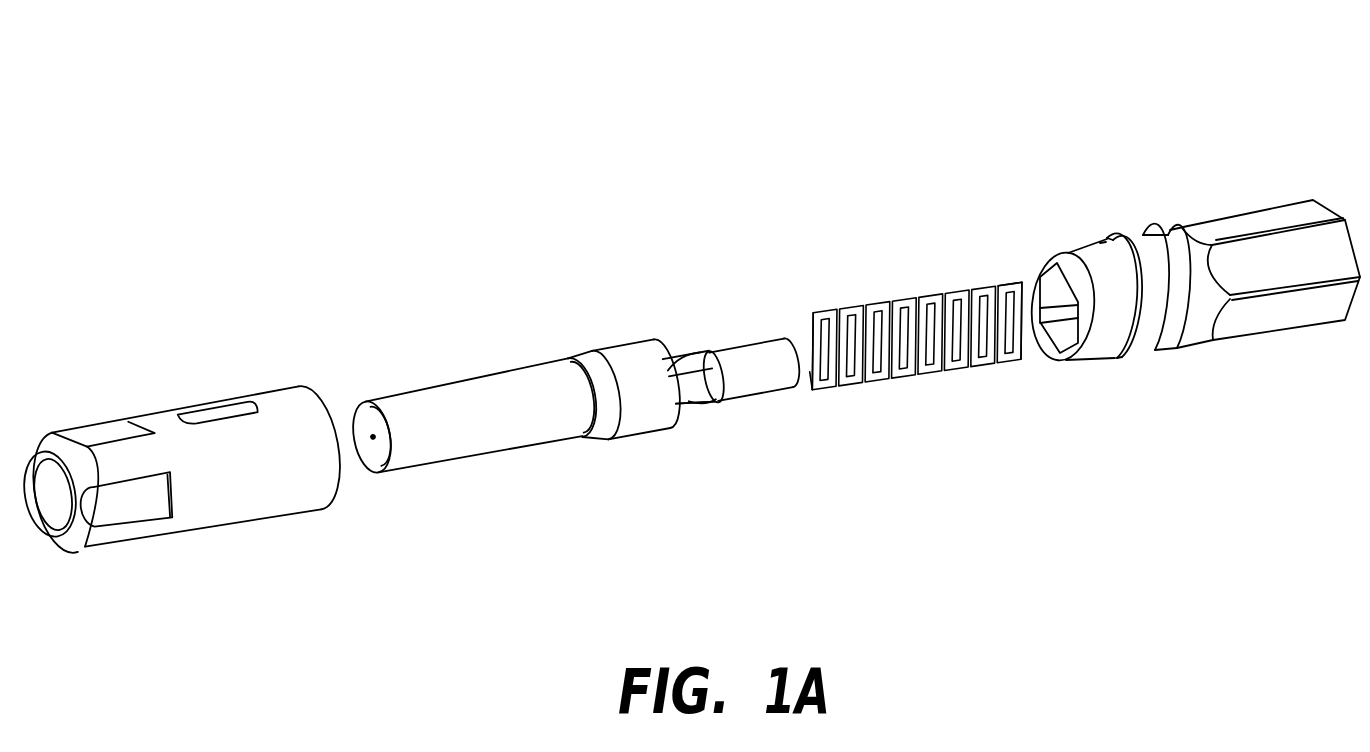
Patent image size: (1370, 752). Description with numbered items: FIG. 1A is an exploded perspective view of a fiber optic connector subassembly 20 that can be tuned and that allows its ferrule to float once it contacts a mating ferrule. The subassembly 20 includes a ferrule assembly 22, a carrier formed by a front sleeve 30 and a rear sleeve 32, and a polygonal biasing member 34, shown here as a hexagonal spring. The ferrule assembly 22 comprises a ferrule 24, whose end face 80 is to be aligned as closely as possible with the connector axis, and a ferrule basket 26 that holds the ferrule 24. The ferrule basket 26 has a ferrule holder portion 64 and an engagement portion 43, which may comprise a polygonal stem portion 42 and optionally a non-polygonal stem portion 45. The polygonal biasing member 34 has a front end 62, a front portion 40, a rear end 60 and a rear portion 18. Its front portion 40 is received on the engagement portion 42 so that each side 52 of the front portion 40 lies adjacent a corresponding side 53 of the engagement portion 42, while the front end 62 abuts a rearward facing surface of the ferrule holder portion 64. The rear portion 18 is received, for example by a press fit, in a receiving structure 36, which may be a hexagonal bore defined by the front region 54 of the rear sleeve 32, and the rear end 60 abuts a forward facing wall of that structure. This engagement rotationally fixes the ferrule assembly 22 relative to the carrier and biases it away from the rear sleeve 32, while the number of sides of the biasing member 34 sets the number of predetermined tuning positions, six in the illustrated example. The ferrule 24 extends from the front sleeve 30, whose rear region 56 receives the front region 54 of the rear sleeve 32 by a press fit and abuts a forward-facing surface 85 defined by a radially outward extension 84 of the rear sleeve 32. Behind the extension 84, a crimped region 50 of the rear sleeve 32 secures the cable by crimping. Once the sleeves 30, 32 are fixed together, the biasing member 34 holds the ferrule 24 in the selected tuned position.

The rear portion 18 is at (988, 277).
The fiber optic connector subassembly 20 is at (788, 135).
The ferrule assembly 22 is at (428, 538).
The ferrule 24 is at (447, 417).
The ferrule basket 26 is at (660, 330).
The front sleeve 30 is at (237, 500).
The rear sleeve 32 is at (1187, 340).
The polygonal biasing member 34 is at (927, 367).
The receiving structure 36 is at (1042, 256).
The front portion 40 is at (857, 270).
The engagement portion 42 is at (692, 360).
The engagement portion 43 is at (727, 407).
The non-polygonal stem portion 45 is at (740, 360).
The crimped region 50 is at (1173, 187).
The side 52 is at (808, 317).
The side 53 is at (700, 352).
The front region 54 is at (1063, 380).
The rear region 56 is at (325, 517).
The rear end 60 is at (1052, 290).
The front end 62 is at (805, 330).
The ferrule holder portion 64 is at (618, 360).
The end face 80 is at (363, 417).
The radially outward extension 84 is at (1105, 240).
The forward-facing surface 85 is at (1103, 243).